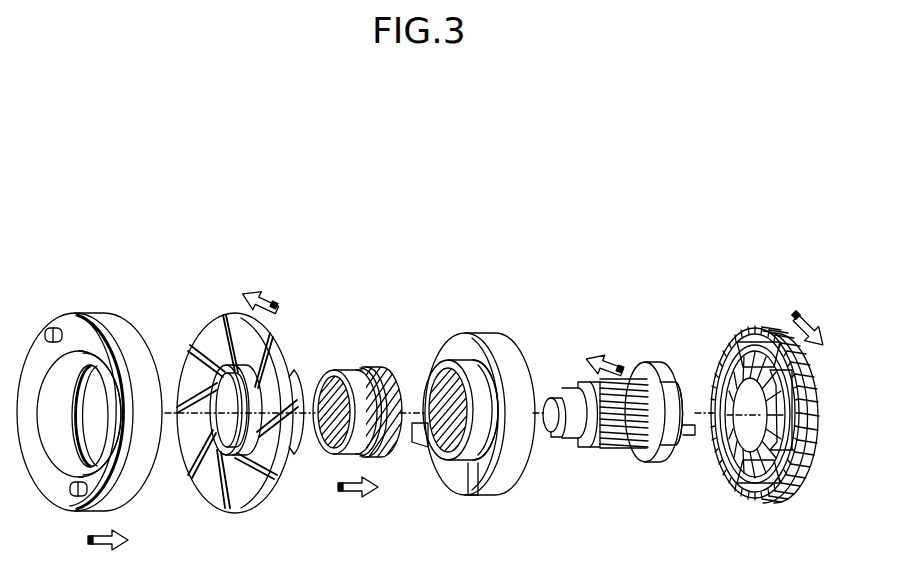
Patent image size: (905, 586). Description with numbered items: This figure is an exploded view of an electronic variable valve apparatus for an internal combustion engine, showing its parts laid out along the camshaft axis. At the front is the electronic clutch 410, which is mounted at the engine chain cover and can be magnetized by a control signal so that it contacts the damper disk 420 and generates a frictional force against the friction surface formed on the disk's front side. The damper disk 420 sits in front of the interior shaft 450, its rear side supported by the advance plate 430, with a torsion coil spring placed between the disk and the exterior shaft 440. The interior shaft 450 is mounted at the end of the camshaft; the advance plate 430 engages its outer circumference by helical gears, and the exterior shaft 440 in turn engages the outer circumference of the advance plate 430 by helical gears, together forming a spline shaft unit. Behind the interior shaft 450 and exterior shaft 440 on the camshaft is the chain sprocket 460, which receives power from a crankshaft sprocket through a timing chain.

The electronic clutch 410 is at (103, 313).
The damper disk 420 is at (233, 313).
The advance plate 430 is at (367, 367).
The exterior shaft 440 is at (480, 333).
The interior shaft 450 is at (651, 362).
The chain sprocket 460 is at (765, 328).